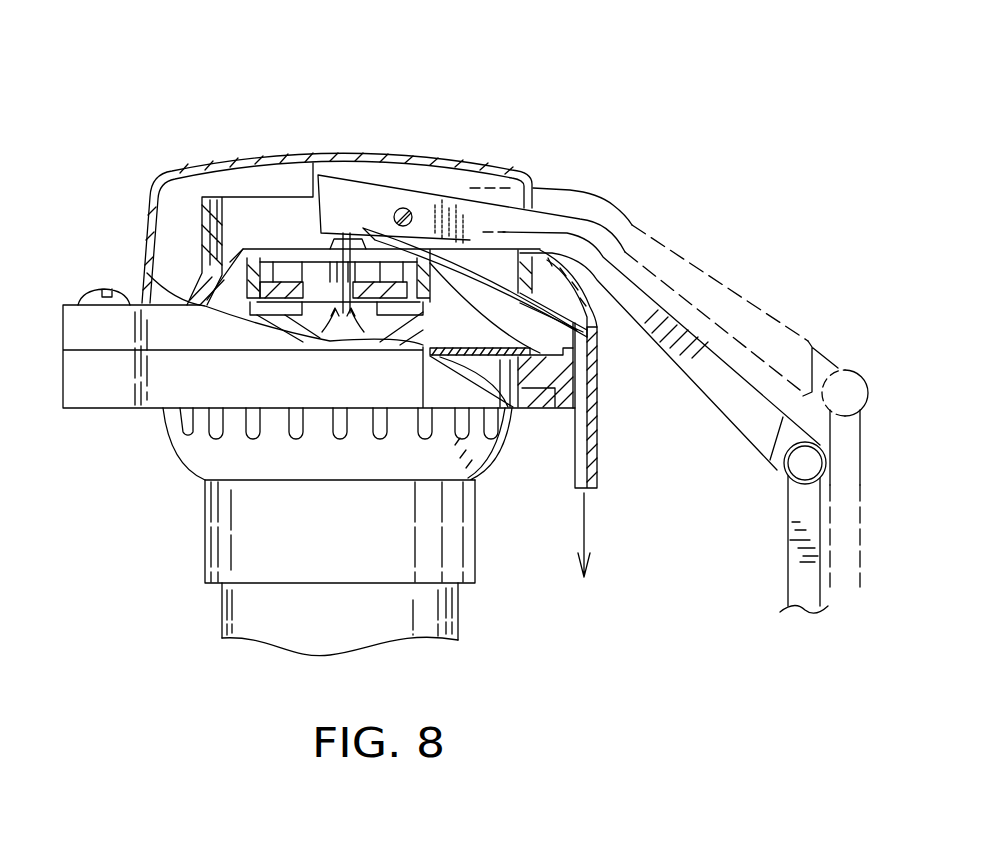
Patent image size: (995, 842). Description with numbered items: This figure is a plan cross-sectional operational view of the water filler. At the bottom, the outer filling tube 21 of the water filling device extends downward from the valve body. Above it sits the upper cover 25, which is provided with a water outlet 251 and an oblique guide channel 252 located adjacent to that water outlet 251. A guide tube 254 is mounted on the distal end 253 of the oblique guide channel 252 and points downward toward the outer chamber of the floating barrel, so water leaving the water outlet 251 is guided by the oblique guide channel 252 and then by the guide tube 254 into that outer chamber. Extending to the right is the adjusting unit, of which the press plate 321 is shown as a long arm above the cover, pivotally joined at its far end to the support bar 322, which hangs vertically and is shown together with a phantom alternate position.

The outer filling tube 21 is at (218, 527).
The upper cover 25 is at (207, 217).
The water outlet 251 is at (340, 240).
The oblique guide channel 252 is at (587, 322).
The distal end 253 is at (588, 322).
The guide tube 254 is at (597, 420).
The press plate 321 is at (549, 222).
The support bar 322 is at (797, 563).